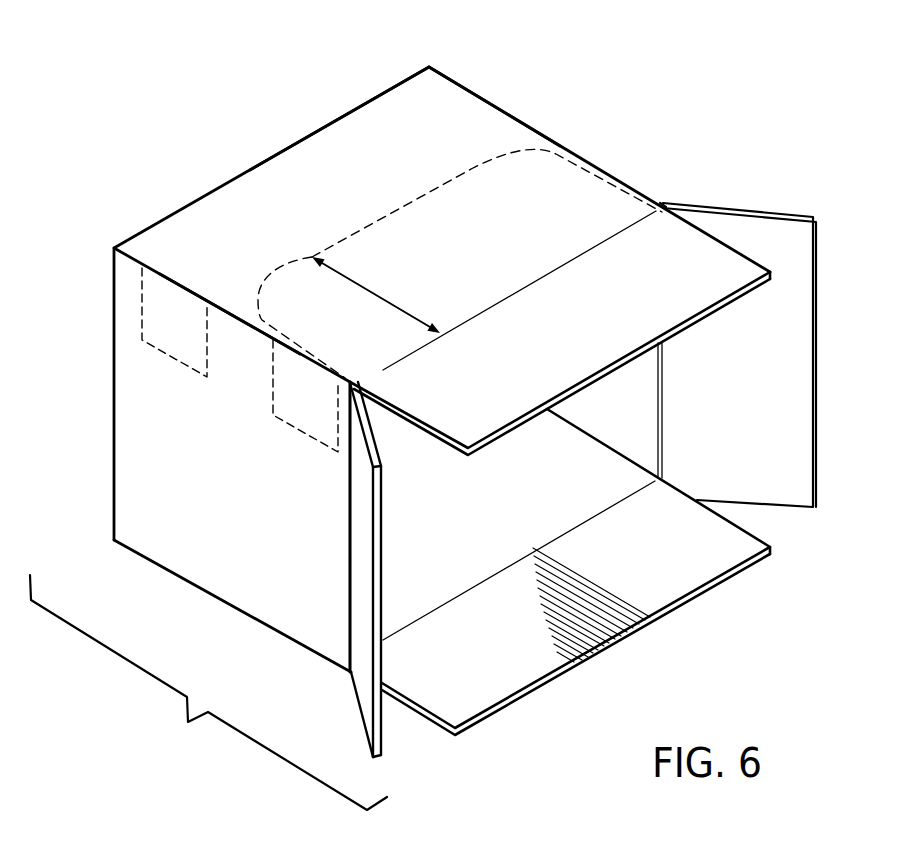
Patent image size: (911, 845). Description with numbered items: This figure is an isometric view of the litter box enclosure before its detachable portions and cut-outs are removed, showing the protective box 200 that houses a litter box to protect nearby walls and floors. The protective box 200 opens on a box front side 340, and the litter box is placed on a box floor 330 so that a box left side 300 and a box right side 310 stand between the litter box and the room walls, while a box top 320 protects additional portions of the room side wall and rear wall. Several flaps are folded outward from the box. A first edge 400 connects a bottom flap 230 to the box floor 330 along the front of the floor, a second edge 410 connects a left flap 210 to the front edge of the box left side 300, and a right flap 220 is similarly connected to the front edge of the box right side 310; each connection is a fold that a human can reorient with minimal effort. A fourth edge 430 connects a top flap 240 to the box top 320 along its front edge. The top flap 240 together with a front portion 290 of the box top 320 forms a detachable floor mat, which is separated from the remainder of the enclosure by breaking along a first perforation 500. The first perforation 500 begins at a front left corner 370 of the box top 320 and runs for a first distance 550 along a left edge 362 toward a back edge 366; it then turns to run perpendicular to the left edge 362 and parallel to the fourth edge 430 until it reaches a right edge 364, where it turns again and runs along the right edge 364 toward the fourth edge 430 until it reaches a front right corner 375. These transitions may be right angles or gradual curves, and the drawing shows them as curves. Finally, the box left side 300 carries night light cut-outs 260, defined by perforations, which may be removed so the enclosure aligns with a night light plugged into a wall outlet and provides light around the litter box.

The protective box 200 is at (208, 692).
The left flap 210 is at (365, 662).
The right flap 220 is at (770, 237).
The bottom flap 230 is at (532, 662).
The top flap 240 is at (687, 297).
The night light cut-outs 260 is at (281, 392).
The front portion of the box top 290 is at (577, 203).
The box left side 300 is at (210, 567).
The box right side 310 is at (640, 388).
The box top 320 is at (495, 130).
The box floor 330 is at (632, 484).
The box front side 340 is at (775, 572).
The left edge of the box top 362 is at (215, 294).
The right edge of the box top 364 is at (460, 82).
The back edge of the box top 366 is at (328, 123).
The front left corner of the box top 370 is at (350, 384).
The front right corner 375 is at (663, 201).
The first edge 400 is at (435, 610).
The second edge 410 is at (350, 612).
The fourth edge 430 is at (509, 315).
The first perforation 500 is at (535, 150).
The first distance 550 is at (368, 283).